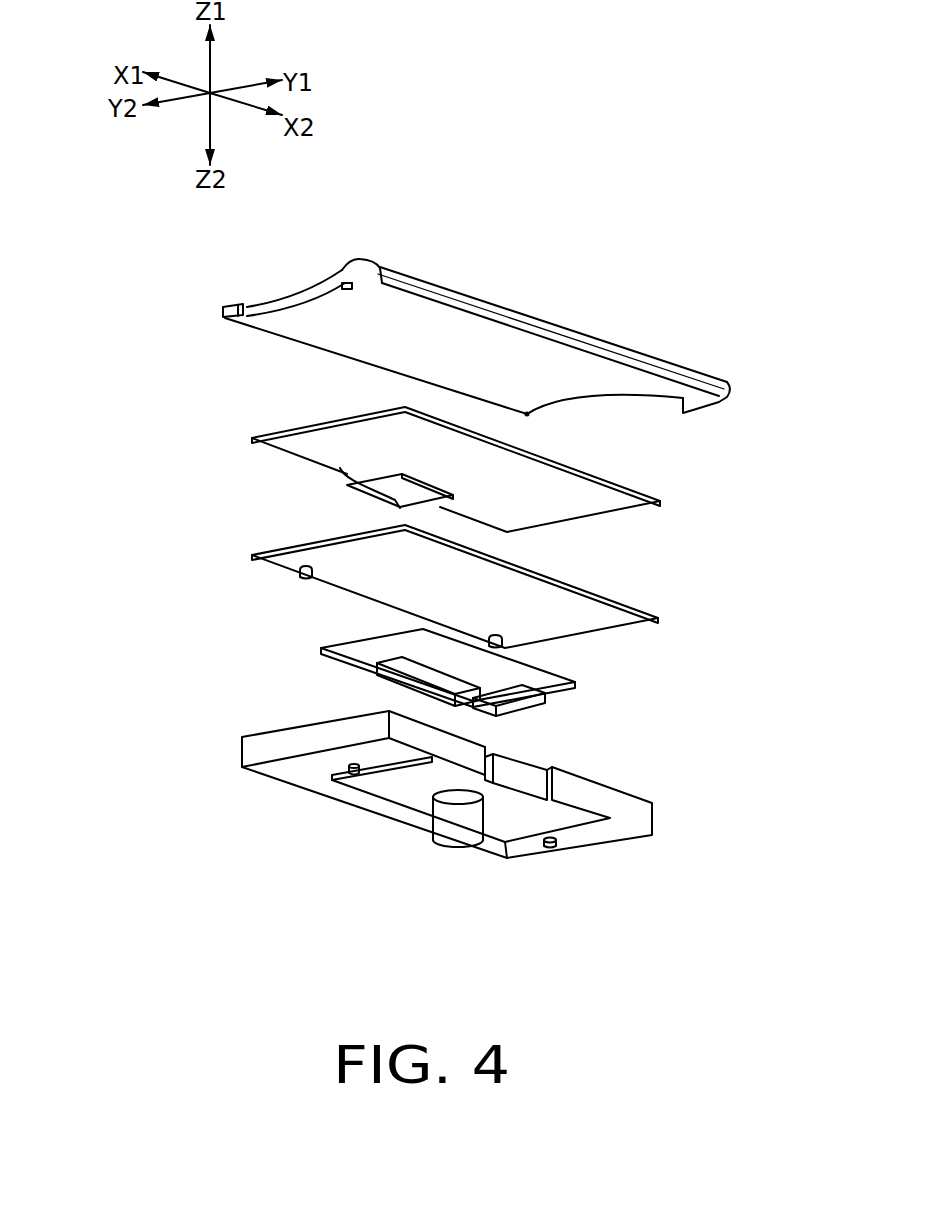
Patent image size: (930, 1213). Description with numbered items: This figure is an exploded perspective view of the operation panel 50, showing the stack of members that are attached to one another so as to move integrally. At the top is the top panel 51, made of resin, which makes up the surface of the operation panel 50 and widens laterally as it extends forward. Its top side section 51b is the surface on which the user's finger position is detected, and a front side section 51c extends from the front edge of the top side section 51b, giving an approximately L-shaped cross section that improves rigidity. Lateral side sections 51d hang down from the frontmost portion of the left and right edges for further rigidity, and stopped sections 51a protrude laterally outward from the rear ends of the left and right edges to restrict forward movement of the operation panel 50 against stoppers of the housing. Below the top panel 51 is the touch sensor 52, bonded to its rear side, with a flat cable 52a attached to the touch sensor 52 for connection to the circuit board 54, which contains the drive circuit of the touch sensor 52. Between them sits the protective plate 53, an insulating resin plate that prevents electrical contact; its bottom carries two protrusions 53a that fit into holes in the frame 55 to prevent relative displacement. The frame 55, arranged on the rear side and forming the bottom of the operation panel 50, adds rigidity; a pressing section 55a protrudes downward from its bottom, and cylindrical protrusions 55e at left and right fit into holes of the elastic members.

The operation panel 50 is at (73, 262).
The top panel 51 is at (200, 298).
The stopped section 51a is at (236, 304).
The top side section 51b is at (316, 335).
The front side section 51c is at (545, 328).
The lateral side section 51d is at (356, 283).
The touch sensor 52 is at (222, 432).
The flat cable 52a is at (455, 496).
The protective plate 53 is at (222, 548).
The protrusion 53a is at (304, 580).
The circuit board 54 is at (297, 669).
The frame 55 is at (222, 748).
The pressing section 55a is at (458, 846).
The cylindrical protrusion 55e is at (352, 776).